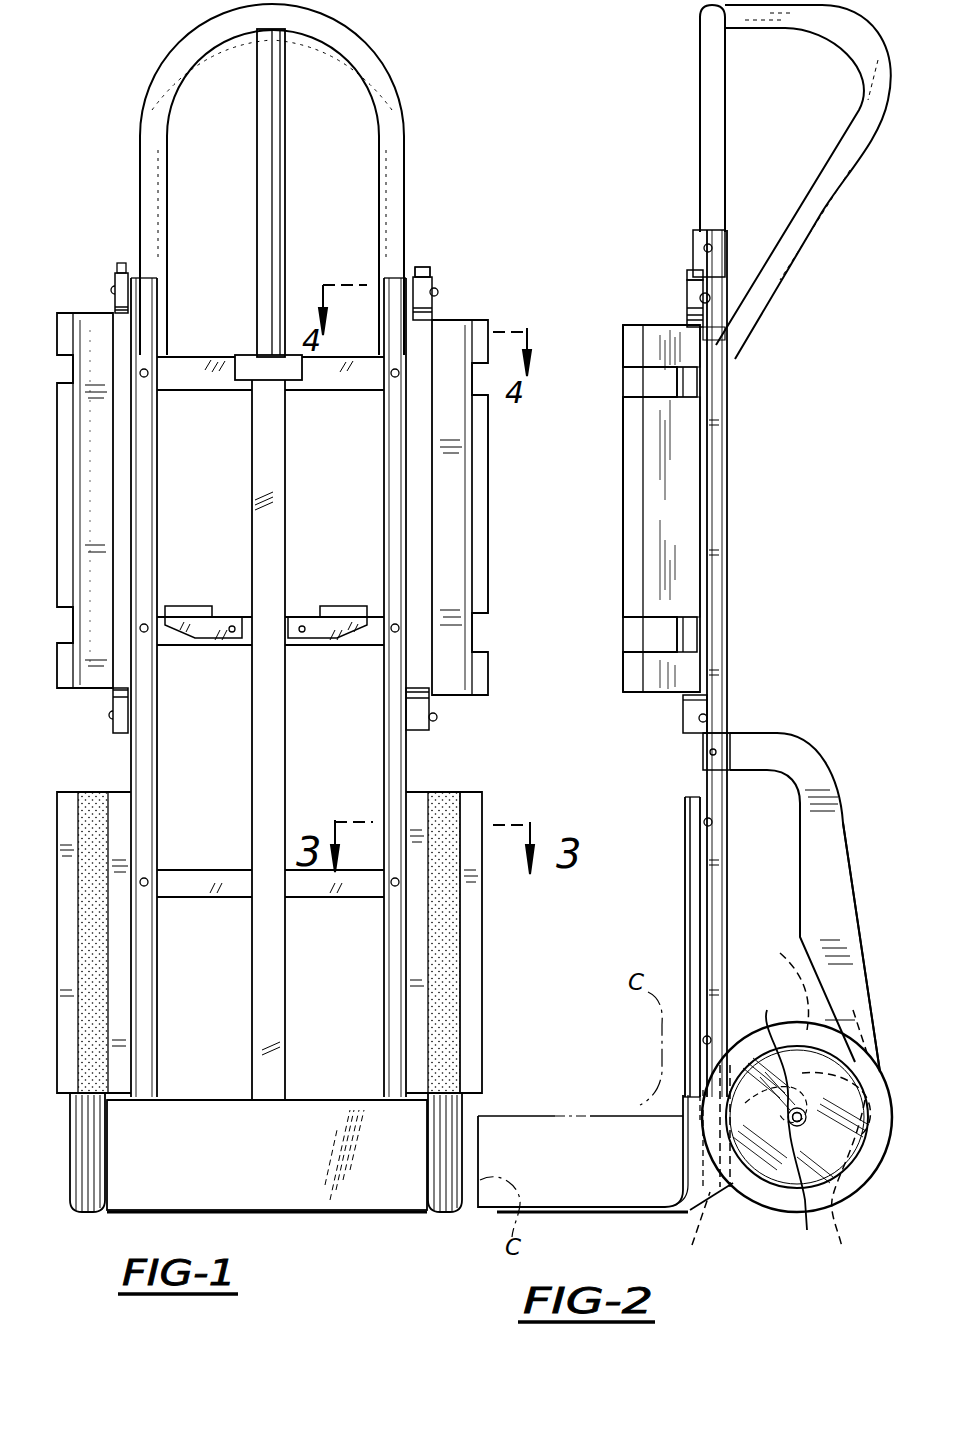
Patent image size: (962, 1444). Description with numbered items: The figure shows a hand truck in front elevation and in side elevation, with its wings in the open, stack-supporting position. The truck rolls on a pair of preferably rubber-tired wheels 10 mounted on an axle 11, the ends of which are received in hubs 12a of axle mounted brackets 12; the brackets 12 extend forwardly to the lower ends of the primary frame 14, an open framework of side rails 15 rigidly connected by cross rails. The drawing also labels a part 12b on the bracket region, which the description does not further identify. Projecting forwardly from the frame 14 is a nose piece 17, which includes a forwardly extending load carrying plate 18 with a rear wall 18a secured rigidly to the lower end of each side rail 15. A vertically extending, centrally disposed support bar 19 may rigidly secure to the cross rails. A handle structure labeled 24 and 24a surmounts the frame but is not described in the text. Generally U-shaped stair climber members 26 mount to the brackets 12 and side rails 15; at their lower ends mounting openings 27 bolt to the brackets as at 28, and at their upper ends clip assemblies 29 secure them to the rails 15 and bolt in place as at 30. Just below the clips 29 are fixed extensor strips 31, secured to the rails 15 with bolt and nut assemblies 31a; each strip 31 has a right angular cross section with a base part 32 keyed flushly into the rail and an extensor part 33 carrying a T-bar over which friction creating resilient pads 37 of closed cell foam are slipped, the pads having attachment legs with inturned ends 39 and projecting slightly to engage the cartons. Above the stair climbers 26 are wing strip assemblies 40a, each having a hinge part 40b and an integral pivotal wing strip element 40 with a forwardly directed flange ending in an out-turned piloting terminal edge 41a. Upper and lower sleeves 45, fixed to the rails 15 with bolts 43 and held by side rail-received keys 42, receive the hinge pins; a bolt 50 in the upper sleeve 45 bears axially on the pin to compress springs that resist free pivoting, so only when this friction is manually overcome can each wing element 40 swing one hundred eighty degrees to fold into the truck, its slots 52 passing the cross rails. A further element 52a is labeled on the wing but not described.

In FIG. 1, the wheels 10 is at (77, 1193).
In FIG. 2, the wheels 10 is at (760, 1027).
In FIG. 2, the axle 11 is at (803, 1197).
In FIG. 2, the axle mounted brackets 12 is at (723, 1200).
In FIG. 2, the hubs 12a is at (803, 1139).
In FIG. 2, the axle bracket leg 12b is at (690, 1237).
In FIG. 1, the primary frame 14 is at (412, 777).
In FIG. 1, the side rails 15 is at (153, 480).
In FIG. 2, the side rails 15 is at (727, 565).
In FIG. 2, the nose piece 17 is at (672, 1152).
In FIG. 1, the load carrying nose or plate 18 is at (382, 1217).
In FIG. 2, the load carrying nose or plate 18 is at (580, 1205).
In FIG. 1, the rear wall 18a is at (236, 1161).
In FIG. 2, the rear wall 18a is at (680, 1172).
In FIG. 1, the support bar 19 is at (280, 460).
In FIG. 1, the handle 24 is at (388, 85).
In FIG. 2, the handle 24 is at (707, 93).
In FIG. 1, the handle brace 24a is at (280, 207).
In FIG. 2, the handle brace 24a is at (823, 212).
In FIG. 2, the stair climber members 26 is at (843, 847).
In FIG. 2, the mounting openings 27 is at (778, 981).
In FIG. 2, the bolt 28 is at (870, 965).
In FIG. 2, the clip assemblies 29 is at (730, 757).
In FIG. 2, the bolt 30 is at (740, 733).
In FIG. 1, the extensor strips 31 is at (120, 832).
In FIG. 2, the extensor strips 31 is at (675, 907).
In FIG. 2, the bolt and nut assemblies 31a is at (700, 822).
In FIG. 2, the base part 32 is at (700, 855).
In FIG. 1, the extensor part 33 is at (470, 815).
In FIG. 1, the resilient pads 37 is at (80, 962).
In FIG. 1, the inturned ends 39 is at (117, 327).
In FIG. 1, the wing strip element 40 is at (470, 318).
In FIG. 2, the wing strip element 40 is at (690, 492).
In FIG. 1, the wing strip assembly 40a is at (492, 564).
In FIG. 2, the wing strip assembly 40a is at (648, 312).
In FIG. 1, the hinge part 40b is at (432, 330).
In FIG. 1, the piloting terminal edge 41a is at (477, 417).
In FIG. 2, the piloting terminal edge 41a is at (632, 412).
In FIG. 2, the keys or flanges 42 is at (717, 298).
In FIG. 2, the bolts 43 is at (720, 315).
In FIG. 1, the sleeves 45 is at (434, 290).
In FIG. 2, the sleeves 45 is at (705, 280).
In FIG. 1, the bolt 50 is at (422, 267).
In FIG. 2, the bolt 50 is at (690, 267).
In FIG. 1, the slots 52 is at (475, 637).
In FIG. 2, the slots 52 is at (677, 370).
In FIG. 2, the bracket ledge 52a is at (632, 632).